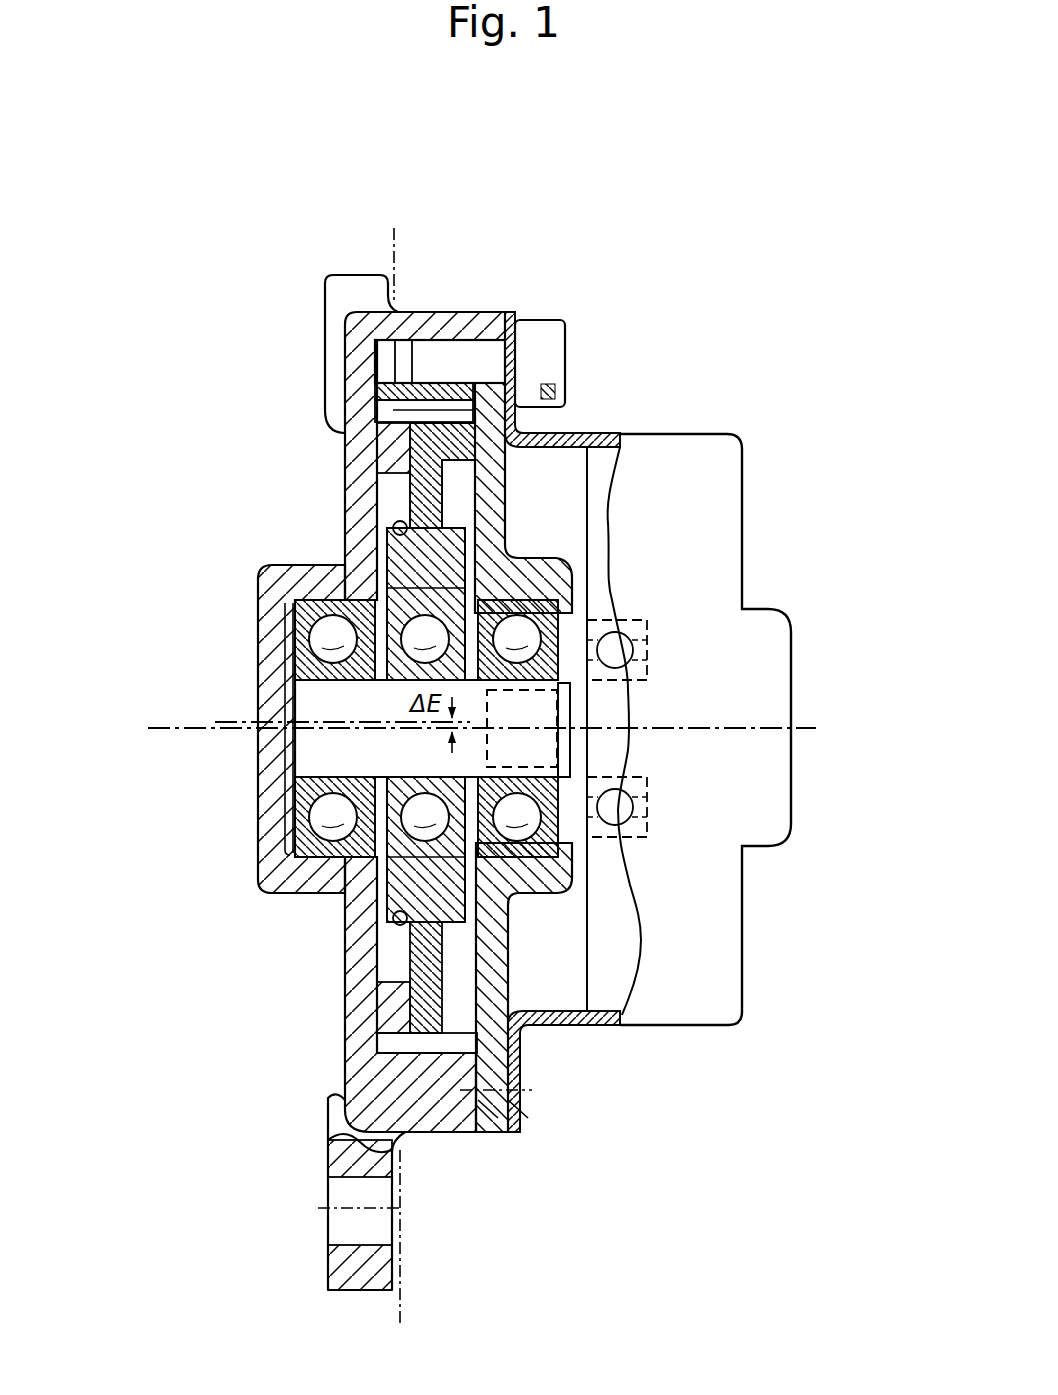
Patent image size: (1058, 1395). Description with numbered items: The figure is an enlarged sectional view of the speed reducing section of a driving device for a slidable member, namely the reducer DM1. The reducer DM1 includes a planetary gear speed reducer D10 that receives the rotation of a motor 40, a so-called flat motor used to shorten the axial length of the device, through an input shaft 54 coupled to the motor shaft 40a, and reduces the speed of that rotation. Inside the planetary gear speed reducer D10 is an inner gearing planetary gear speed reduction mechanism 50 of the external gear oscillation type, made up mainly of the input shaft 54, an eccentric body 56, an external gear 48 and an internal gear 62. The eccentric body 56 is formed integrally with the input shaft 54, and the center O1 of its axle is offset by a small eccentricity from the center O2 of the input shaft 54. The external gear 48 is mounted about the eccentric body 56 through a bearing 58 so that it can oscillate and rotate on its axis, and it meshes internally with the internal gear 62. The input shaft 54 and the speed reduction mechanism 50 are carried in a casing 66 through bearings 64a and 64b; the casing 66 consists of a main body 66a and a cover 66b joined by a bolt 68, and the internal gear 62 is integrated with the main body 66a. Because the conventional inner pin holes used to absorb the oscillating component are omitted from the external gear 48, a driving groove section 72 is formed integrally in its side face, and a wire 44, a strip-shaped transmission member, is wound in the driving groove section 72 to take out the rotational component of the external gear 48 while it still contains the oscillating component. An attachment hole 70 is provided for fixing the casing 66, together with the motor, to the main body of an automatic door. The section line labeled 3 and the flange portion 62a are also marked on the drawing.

The reducer DM1 is at (692, 588).
The planetary gear speed reducer D10 is at (451, 294).
The inner gearing planetary gear speed reduction mechanism 50 is at (272, 287).
The section line 3 is at (392, 228).
The bolt 68 is at (540, 325).
The internal gear 62 is at (552, 367).
The flange 62a is at (575, 442).
The external gear 48 is at (352, 440).
The driving groove section 72 is at (398, 520).
The eccentric body 56 is at (250, 583).
The bearing 58 is at (472, 590).
The bearing 64a is at (575, 597).
The bearing 64b is at (293, 617).
The motor 40 is at (722, 549).
The motor shaft 40a is at (565, 745).
The input shaft 54 is at (330, 743).
The wire 44 is at (398, 931).
The attachment hole 70 is at (342, 1240).
The casing 66 is at (497, 1177).
The main body 66a is at (435, 1117).
The cover 66b is at (530, 1152).
The center of the axle of the eccentric body O1 is at (232, 722).
The center of the input shaft O2 is at (237, 730).